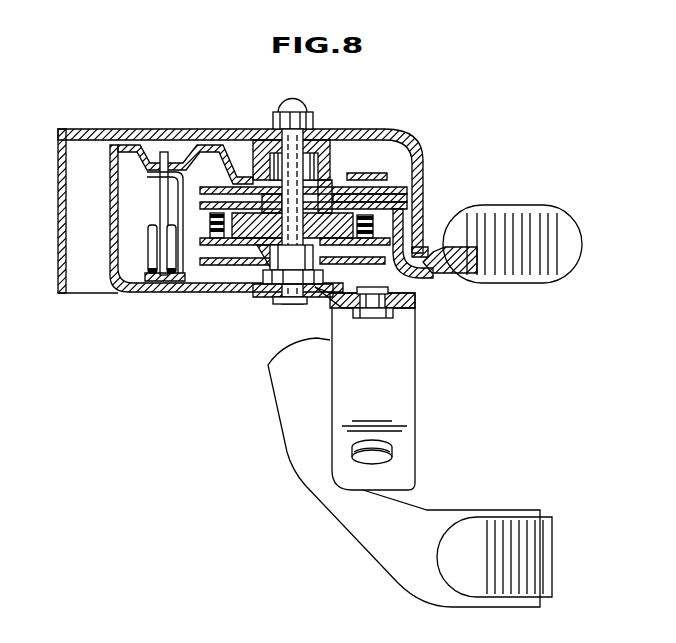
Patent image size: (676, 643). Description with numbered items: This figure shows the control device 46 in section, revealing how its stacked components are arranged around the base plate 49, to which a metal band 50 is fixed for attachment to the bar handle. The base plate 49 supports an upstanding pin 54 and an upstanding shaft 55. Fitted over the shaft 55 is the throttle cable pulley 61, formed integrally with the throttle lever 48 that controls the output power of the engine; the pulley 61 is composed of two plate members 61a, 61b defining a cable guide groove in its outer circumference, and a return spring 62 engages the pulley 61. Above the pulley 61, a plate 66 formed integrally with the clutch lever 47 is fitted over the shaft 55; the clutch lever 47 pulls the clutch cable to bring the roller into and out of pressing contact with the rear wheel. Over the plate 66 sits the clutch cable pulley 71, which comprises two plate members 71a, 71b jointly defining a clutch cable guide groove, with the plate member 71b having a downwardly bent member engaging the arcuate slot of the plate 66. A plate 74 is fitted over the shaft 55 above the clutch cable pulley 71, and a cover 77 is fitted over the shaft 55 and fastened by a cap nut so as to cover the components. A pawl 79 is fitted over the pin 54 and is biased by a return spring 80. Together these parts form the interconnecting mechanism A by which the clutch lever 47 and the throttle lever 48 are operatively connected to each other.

The control device 46 is at (390, 126).
The clutch lever 47 is at (517, 240).
The throttle lever 48 is at (440, 523).
The base plate 49 is at (122, 283).
The metal band 50 is at (405, 367).
The upstanding pin 54 is at (163, 213).
The upstanding shaft 55 is at (297, 170).
The throttle cable pulley 61 is at (257, 275).
The plate member 61a is at (392, 262).
The plate member 61b is at (368, 275).
The return spring 62 is at (245, 262).
The plate 66 is at (400, 220).
The clutch cable pulley 71 is at (363, 188).
The plate member 71a is at (220, 187).
The plate member 71b is at (243, 202).
The plate 74 is at (195, 152).
The cover 77 is at (327, 130).
The pawl 79 is at (180, 193).
The return spring 80 is at (152, 260).
The interconnecting mechanism A is at (207, 225).